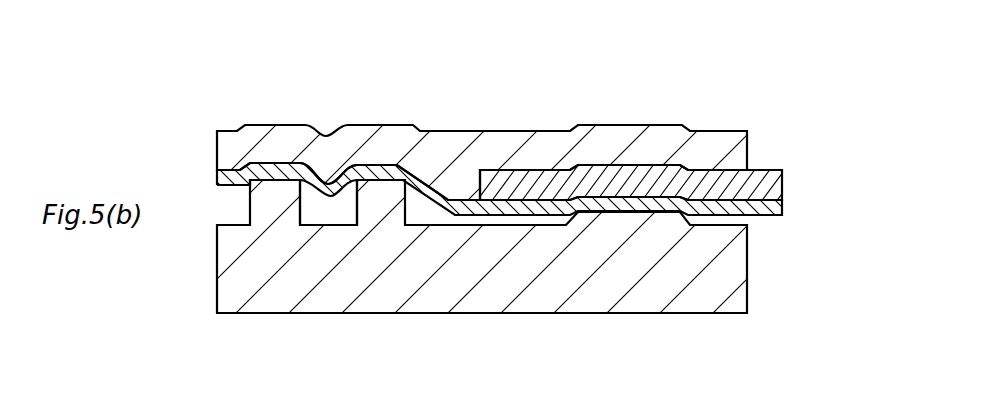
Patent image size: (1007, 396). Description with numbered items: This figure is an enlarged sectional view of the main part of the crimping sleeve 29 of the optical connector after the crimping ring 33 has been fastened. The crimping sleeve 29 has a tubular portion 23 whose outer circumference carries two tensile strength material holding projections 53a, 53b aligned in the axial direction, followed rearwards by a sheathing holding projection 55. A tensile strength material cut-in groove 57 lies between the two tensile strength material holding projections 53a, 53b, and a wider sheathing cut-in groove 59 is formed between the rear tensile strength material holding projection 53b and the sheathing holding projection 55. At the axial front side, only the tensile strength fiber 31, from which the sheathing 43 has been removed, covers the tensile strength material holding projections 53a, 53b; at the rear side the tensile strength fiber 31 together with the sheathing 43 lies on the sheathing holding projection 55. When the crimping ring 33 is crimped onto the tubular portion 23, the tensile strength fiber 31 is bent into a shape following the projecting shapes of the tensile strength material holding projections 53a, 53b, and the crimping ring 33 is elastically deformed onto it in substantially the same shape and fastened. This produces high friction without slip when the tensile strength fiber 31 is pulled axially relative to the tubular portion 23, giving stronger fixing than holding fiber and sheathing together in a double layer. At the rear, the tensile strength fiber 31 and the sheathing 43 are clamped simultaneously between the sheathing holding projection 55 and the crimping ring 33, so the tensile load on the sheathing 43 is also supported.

The tubular portion 23 is at (750, 273).
The crimping sleeve 29 is at (207, 313).
The tensile strength fiber 31 is at (217, 172).
The crimping ring 33 is at (597, 115).
The sheathing 43 is at (773, 185).
The tensile strength material holding projection 53a is at (282, 186).
The tensile strength material holding projection 53b is at (380, 166).
The sheathing holding projection 55 is at (628, 216).
The tensile strength material cut-in groove 57 is at (322, 213).
The sheathing cut-in groove 59 is at (535, 216).